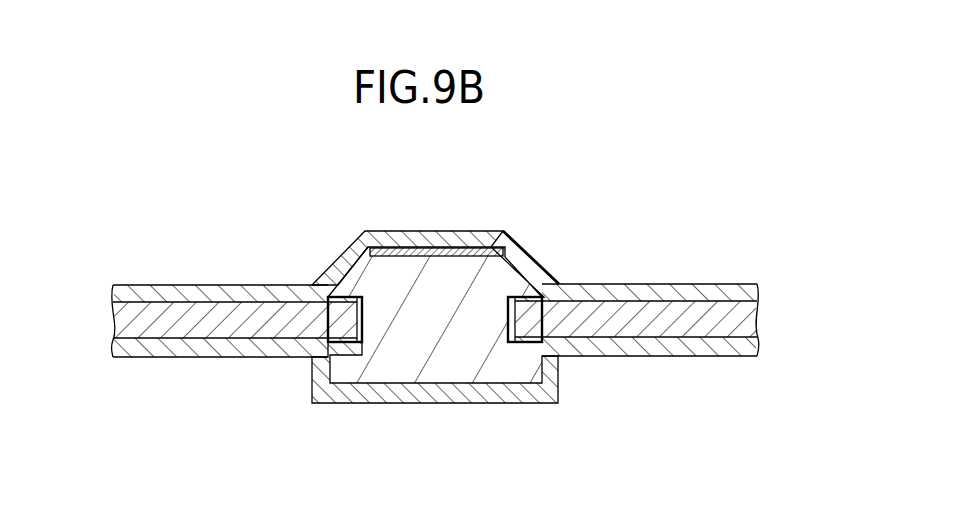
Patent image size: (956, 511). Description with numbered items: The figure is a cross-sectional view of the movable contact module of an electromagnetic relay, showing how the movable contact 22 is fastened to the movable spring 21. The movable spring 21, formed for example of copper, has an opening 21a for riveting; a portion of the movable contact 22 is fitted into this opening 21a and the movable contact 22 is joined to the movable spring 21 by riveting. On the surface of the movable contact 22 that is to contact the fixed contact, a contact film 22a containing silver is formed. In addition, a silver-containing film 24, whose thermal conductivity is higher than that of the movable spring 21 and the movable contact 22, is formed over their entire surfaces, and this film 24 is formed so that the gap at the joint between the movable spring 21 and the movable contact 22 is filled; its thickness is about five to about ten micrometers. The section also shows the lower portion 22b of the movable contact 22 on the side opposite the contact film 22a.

The movable spring 21 is at (232, 318).
The opening 21a is at (357, 327).
The movable contact 22 is at (423, 319).
The contact film 22a is at (470, 252).
The bottom wall portion 22b is at (528, 365).
The film 24 is at (660, 283).